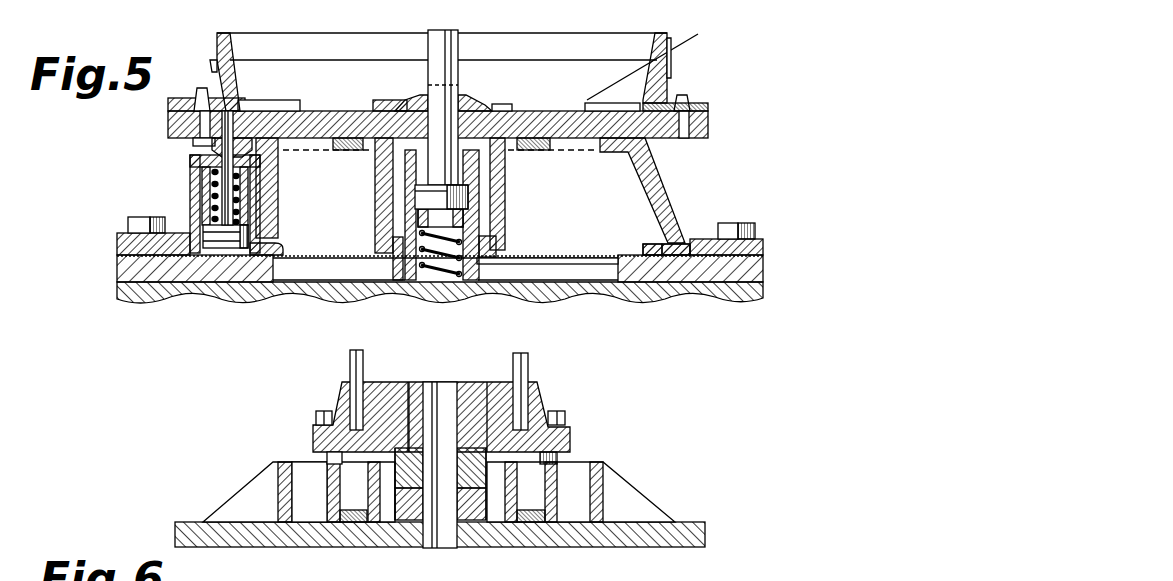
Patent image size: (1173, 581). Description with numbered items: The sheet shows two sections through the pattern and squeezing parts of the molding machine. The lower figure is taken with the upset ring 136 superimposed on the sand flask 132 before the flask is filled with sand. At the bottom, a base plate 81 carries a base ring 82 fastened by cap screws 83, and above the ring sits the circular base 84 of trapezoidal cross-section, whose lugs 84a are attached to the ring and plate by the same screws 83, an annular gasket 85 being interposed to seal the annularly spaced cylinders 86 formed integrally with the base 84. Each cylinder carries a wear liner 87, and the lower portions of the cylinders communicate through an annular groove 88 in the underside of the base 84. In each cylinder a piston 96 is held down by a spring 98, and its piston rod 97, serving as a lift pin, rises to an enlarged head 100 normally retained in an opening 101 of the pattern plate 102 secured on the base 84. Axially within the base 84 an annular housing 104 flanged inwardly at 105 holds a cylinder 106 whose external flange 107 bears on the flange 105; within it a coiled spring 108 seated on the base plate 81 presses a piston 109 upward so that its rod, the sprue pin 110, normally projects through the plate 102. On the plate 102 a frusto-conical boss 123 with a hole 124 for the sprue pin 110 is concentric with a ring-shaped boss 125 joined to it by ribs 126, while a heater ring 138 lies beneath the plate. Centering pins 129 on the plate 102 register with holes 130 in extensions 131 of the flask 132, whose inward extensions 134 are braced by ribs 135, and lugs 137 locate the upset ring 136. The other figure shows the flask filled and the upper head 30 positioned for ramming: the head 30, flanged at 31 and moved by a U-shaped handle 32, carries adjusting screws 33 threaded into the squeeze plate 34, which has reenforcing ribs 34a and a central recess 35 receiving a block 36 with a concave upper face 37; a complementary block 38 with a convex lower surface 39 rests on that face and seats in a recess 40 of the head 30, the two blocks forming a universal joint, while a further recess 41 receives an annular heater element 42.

In FIG. 5, the base plate 81 is at (766, 298).
In FIG. 5, the base ring 82 is at (118, 268).
In FIG. 5, the cap screws 83 is at (133, 222).
In FIG. 5, the base 84 is at (650, 170).
In FIG. 5, the lugs 84a is at (118, 242).
In FIG. 5, the annular gasket 85 is at (190, 290).
In FIG. 5, the cylinders 86 is at (192, 210).
In FIG. 5, the wear liners 87 is at (258, 210).
In FIG. 5, the annular groove 88 is at (652, 243).
In FIG. 5, the piston 96 is at (246, 232).
In FIG. 5, the piston rod 97 is at (225, 185).
In FIG. 5, the spring 98 is at (243, 190).
In FIG. 5, the head 100 is at (208, 137).
In FIG. 5, the opening 101 is at (240, 88).
In FIG. 5, the pattern plate 102 is at (172, 120).
In FIG. 5, the annular housing 104 is at (487, 228).
In FIG. 5, the flange 105 is at (497, 248).
In FIG. 5, the cylinder 106 is at (480, 207).
In FIG. 5, the annular external flange 107 is at (493, 265).
In FIG. 5, the coiled spring 108 is at (445, 272).
In FIG. 5, the piston 109 is at (418, 202).
In FIG. 5, the sprue pin 110 is at (440, 48).
In FIG. 5, the frusto-conical boss 123 is at (465, 100).
In FIG. 5, the hole 124 is at (396, 104).
In FIG. 5, the ring-shaped boss 125 is at (513, 104).
In FIG. 5, the ribs 126 is at (384, 100).
In FIG. 5, the centering pins 129 is at (199, 90).
In FIG. 5, the holes 130 is at (196, 100).
In FIG. 5, the extensions 131 is at (178, 101).
In FIG. 5, the sand flask 132 is at (668, 85).
In FIG. 5, the inward extensions 134 is at (630, 103).
In FIG. 5, the ribs 135 is at (236, 112).
In FIG. 5, the upset ring 136 is at (668, 40).
In FIG. 5, the lugs 137 is at (213, 60).
In FIG. 5, the heater ring 138 is at (540, 151).
In FIG. 6, the head 30 is at (538, 387).
In FIG. 6, the flange 31 is at (572, 433).
In FIG. 6, the U-shaped handle 32 is at (531, 358).
In FIG. 6, the adjusting screws 33 is at (318, 412).
In FIG. 6, the squeeze plate 34 is at (705, 532).
In FIG. 6, the reenforcing ribs 34a is at (605, 480).
In FIG. 6, the recess 35 is at (488, 508).
In FIG. 6, the block 36 is at (403, 508).
In FIG. 6, the concave upper face 37 is at (405, 520).
In FIG. 6, the complementary block 38 is at (475, 455).
In FIG. 6, the convex lower surface 39 is at (460, 488).
In FIG. 6, the recess 40 is at (407, 452).
In FIG. 6, the recess 41 is at (346, 522).
In FIG. 6, the heater element 42 is at (353, 523).